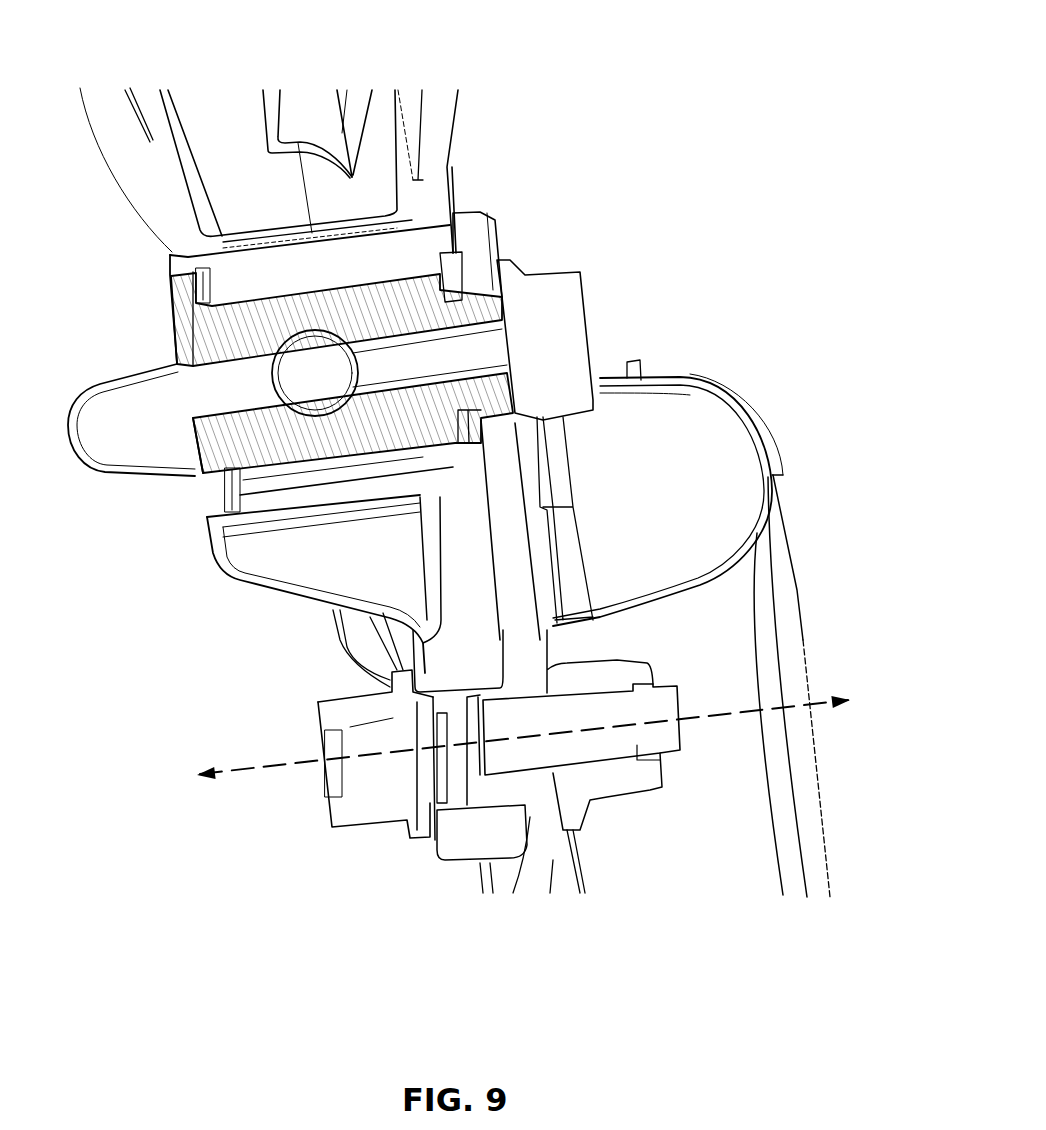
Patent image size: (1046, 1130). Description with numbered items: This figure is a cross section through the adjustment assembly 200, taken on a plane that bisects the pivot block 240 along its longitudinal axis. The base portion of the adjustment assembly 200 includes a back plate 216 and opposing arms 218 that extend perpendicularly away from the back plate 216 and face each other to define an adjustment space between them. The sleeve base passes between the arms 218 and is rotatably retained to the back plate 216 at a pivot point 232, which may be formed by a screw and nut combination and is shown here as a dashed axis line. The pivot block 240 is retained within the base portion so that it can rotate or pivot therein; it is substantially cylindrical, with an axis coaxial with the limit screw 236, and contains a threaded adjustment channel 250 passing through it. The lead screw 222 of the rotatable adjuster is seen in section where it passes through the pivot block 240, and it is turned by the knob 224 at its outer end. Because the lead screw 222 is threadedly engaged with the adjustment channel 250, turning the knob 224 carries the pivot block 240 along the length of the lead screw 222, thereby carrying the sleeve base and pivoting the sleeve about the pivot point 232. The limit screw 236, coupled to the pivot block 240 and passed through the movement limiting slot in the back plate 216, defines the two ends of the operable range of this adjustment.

The adjustment assembly 200 is at (597, 107).
The back plate 216 is at (500, 238).
The opposing arms 218 is at (298, 562).
The lead screw 222 is at (320, 377).
The knob 224 is at (620, 347).
The pivot point 232 is at (343, 757).
The limit screw 236 is at (557, 305).
The pivot block 240 is at (243, 442).
The threaded adjustment channel 250 is at (278, 330).